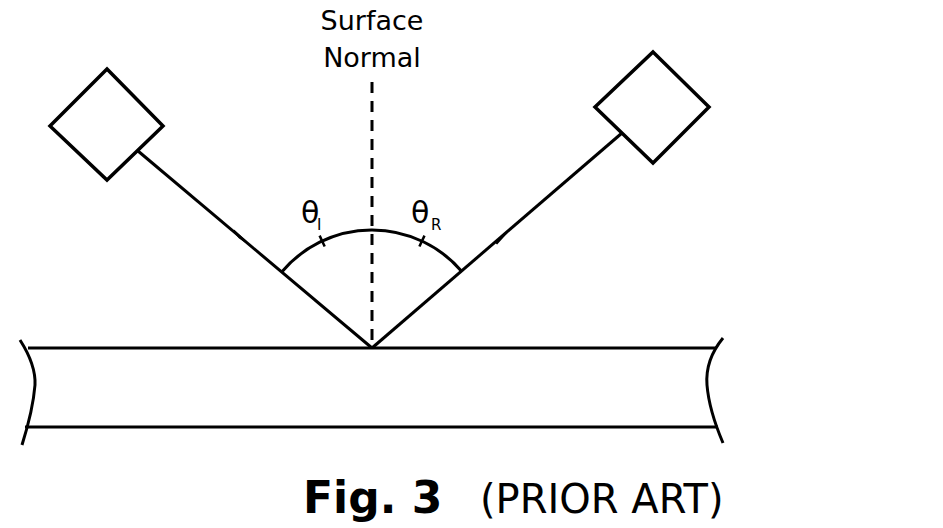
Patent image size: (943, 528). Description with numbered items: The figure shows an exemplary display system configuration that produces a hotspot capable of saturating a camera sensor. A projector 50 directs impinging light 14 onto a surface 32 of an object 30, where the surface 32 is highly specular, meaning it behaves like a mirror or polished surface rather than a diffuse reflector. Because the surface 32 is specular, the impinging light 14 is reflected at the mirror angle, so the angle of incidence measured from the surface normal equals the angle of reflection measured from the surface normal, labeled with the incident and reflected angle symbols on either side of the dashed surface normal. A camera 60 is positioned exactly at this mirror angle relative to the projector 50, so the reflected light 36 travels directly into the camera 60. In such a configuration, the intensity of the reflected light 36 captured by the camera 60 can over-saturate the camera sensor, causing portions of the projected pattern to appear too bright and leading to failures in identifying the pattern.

The impinging light 14 is at (215, 216).
The object 30 is at (371, 369).
The surface 32 is at (668, 347).
The reflected light 36 is at (550, 195).
The projector 50 is at (81, 93).
The camera 60 is at (676, 75).